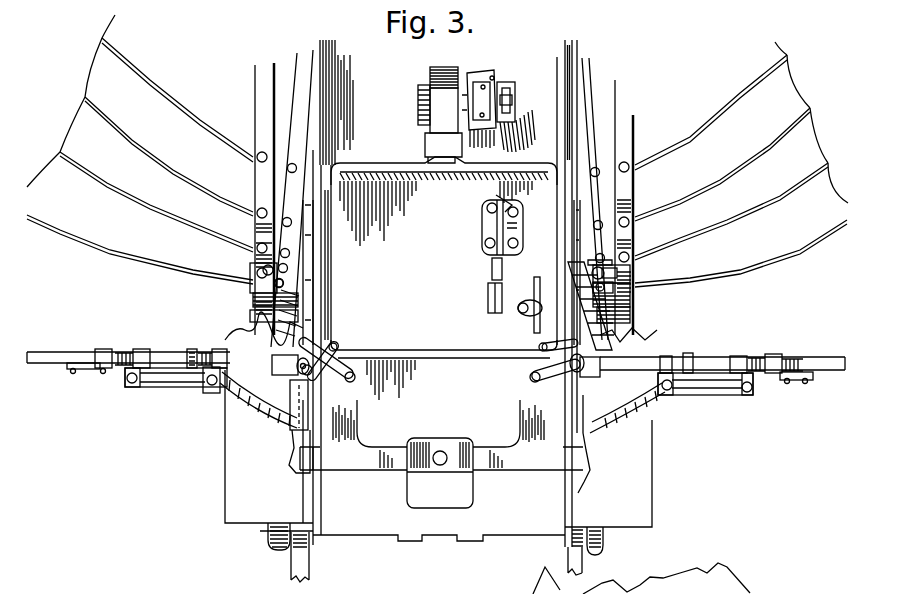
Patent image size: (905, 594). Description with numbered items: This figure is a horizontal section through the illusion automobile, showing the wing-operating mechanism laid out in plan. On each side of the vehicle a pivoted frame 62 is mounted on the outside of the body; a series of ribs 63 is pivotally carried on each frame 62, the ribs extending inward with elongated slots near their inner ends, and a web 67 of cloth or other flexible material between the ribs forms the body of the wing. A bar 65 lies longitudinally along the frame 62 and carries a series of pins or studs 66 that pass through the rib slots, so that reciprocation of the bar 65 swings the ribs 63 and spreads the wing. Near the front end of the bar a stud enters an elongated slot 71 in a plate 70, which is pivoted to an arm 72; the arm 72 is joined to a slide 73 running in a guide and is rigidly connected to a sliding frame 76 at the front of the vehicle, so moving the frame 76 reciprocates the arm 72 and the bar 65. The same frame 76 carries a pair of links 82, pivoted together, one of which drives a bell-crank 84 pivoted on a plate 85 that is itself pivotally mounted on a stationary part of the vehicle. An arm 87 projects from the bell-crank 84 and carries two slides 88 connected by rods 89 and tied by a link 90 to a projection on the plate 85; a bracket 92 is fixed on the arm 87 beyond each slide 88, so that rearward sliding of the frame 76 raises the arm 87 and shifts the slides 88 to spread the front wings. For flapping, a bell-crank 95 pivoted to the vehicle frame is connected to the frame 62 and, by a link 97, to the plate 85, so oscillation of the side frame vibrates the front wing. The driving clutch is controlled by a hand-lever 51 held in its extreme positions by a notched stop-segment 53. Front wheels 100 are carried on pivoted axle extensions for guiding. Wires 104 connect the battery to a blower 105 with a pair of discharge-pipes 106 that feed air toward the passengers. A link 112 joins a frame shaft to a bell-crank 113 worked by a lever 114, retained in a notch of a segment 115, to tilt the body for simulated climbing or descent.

The hand-lever 51 is at (531, 292).
The stop-segment 53 is at (537, 278).
The pivoted frame 62 is at (260, 94).
The ribs 63 is at (147, 207).
The bar 65 is at (300, 62).
The pins or studs 66 is at (332, 205).
The web 67 is at (104, 76).
The plate 70 is at (250, 272).
The elongated slot 71 is at (635, 265).
The arm 72 is at (253, 300).
The slide 73 is at (293, 438).
The sliding frame 76 is at (487, 450).
The links 82 is at (337, 347).
The bell-crank 84 is at (290, 343).
The plate 85 is at (715, 357).
The arm 87 is at (60, 352).
The slides 88 is at (143, 349).
The rods 89 is at (175, 388).
The link 90 is at (262, 420).
The bracket 92 is at (105, 349).
The bell-crank 95 is at (314, 242).
The link 97 is at (257, 323).
The front wheels 100 is at (266, 546).
The wires 104 is at (505, 70).
The blower 105 is at (447, 105).
The discharge-pipes 106 is at (455, 186).
The link 112 is at (492, 295).
The bell-crank 113 is at (492, 260).
The lever 114 is at (493, 227).
The segment 115 is at (509, 202).